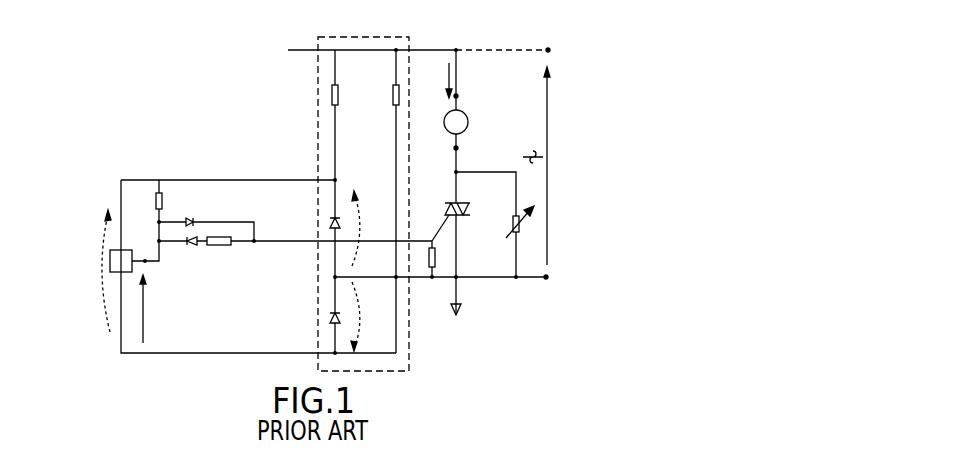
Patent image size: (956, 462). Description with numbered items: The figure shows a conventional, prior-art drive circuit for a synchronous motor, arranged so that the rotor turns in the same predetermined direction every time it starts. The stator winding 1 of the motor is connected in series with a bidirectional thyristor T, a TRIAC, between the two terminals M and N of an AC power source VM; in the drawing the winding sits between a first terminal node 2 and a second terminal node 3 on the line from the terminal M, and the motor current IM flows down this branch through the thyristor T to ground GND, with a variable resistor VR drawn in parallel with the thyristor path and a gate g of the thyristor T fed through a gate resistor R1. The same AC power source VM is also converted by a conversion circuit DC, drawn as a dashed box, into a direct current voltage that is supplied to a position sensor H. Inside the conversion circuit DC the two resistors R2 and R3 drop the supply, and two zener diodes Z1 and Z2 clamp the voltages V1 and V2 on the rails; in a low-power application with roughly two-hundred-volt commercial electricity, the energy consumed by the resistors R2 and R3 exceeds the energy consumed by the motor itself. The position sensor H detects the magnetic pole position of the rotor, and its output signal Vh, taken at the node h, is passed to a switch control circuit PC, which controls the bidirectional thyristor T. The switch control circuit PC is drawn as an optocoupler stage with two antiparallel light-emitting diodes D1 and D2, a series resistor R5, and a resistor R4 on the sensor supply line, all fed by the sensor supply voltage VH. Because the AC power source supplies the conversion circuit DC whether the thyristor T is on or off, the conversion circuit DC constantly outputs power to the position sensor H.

The resistor R4 is at (157, 204).
The light emitting diode D1 of optocoupler D1 is at (188, 219).
The light emitting diode D2 of optocoupler D2 is at (191, 247).
The resistor R5 is at (222, 246).
The switch control circuit PC is at (215, 214).
The position sensor H is at (126, 234).
The Hall sensor output node h is at (150, 255).
The position sensor supply signal VH is at (100, 259).
The output signal of the position sensor Vh is at (147, 303).
The conversion circuit DC is at (380, 37).
The resistor R3 is at (393, 88).
The resistor R2 is at (339, 97).
The motor current IM is at (446, 78).
The motor terminal node 2 is at (469, 96).
The stator winding 1 is at (468, 122).
The motor terminal node 3 is at (458, 149).
The terminal of the AC power source M is at (548, 48).
The AC power source VM is at (546, 121).
The bidirectional thyristor T is at (456, 204).
The triac gate g is at (440, 223).
The gate resistor R1 is at (428, 257).
The variable resistor VR is at (512, 224).
The ground GND is at (462, 317).
The terminal of the AC power source N is at (547, 280).
The voltage V1 is at (359, 213).
The zener diode Z1 is at (340, 226).
The voltage V2 is at (357, 301).
The zener diode Z2 is at (340, 321).